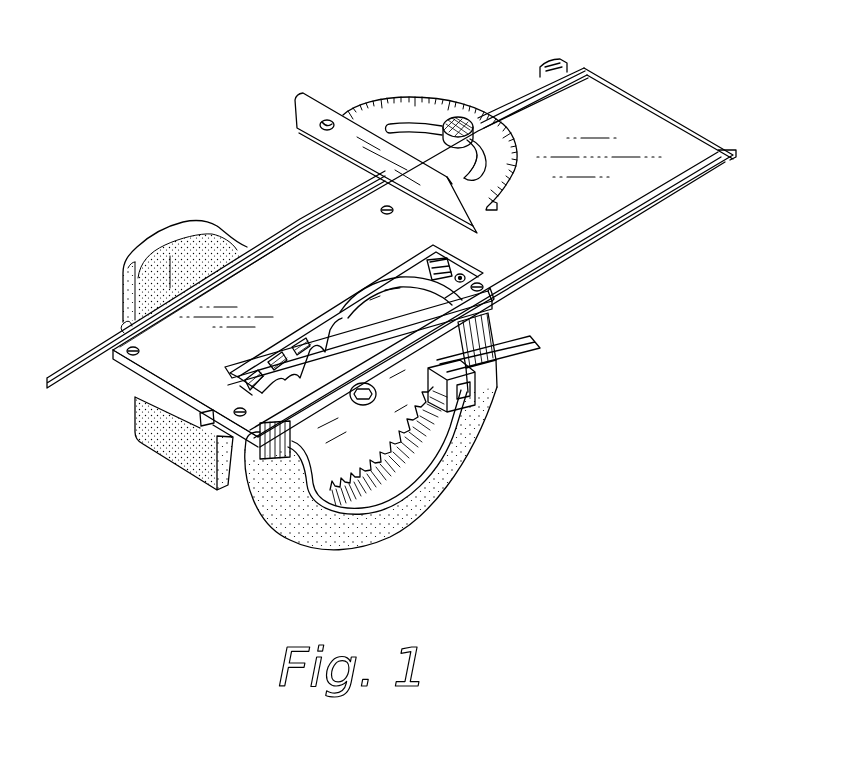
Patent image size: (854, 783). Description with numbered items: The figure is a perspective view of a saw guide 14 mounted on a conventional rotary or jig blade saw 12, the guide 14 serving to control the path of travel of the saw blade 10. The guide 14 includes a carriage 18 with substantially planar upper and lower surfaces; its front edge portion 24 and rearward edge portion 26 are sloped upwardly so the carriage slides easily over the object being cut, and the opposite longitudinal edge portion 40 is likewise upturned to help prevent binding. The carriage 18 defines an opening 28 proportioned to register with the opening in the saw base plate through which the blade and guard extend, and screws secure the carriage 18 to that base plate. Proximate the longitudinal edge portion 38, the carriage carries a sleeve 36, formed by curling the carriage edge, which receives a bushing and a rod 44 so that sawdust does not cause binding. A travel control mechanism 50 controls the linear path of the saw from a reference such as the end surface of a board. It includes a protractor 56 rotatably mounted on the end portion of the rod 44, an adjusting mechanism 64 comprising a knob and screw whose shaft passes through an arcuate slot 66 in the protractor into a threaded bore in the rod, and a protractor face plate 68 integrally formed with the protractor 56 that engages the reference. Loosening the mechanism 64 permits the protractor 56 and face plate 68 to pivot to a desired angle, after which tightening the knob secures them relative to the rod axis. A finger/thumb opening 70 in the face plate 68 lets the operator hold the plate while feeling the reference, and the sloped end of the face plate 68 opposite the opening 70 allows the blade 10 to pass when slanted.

The rotary or jig blade 10 is at (382, 442).
The saw 12 is at (254, 506).
The saw guide 14 is at (571, 210).
The carriage 18 is at (636, 118).
The front edge portion 24 is at (125, 371).
The rearward edge portion 26 is at (724, 155).
The opening 28 is at (245, 360).
The sleeve 36 is at (303, 215).
The longitudinal edge portion 38 is at (590, 75).
The opposite longitudinal edge portion 40 is at (647, 205).
The rod 44 is at (62, 368).
The travel control mechanism 50 is at (440, 98).
The protractor 56 is at (410, 101).
The mechanism for adjusting 64 is at (483, 124).
The arcuate slot 66 is at (413, 135).
The protractor face plate 68 is at (297, 112).
The finger/thumb opening 70 is at (320, 143).